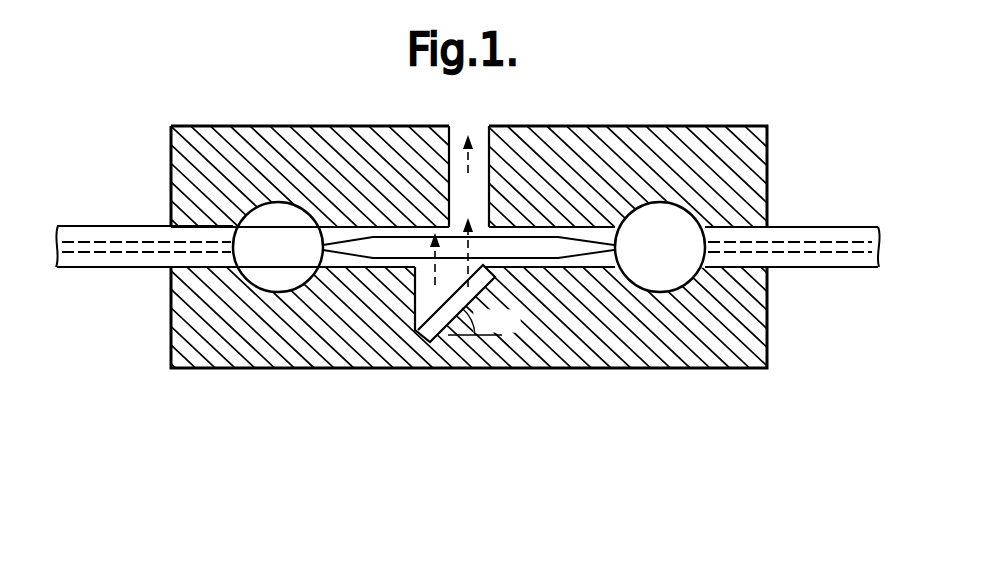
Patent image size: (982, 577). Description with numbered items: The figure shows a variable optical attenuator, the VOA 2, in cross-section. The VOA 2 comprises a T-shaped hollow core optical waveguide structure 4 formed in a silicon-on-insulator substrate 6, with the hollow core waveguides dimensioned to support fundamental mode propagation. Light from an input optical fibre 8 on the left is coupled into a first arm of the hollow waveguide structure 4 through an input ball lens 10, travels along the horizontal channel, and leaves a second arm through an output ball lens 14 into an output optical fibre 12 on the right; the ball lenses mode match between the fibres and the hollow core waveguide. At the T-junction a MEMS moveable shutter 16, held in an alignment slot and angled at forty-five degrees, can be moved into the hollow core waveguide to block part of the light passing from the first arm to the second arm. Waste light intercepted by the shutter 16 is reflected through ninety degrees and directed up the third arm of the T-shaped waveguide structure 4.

The VOA 2 is at (468, 288).
The T-shaped hollow core optical waveguide structure 4 is at (461, 208).
The silicon-on-insulator substrate 6 is at (727, 165).
The input optical fibre 8 is at (103, 226).
The input ball lens 10 is at (276, 202).
The output optical fibre 12 is at (813, 227).
The output ball lens 14 is at (660, 202).
The MEMS moveable shutter 16 is at (430, 343).